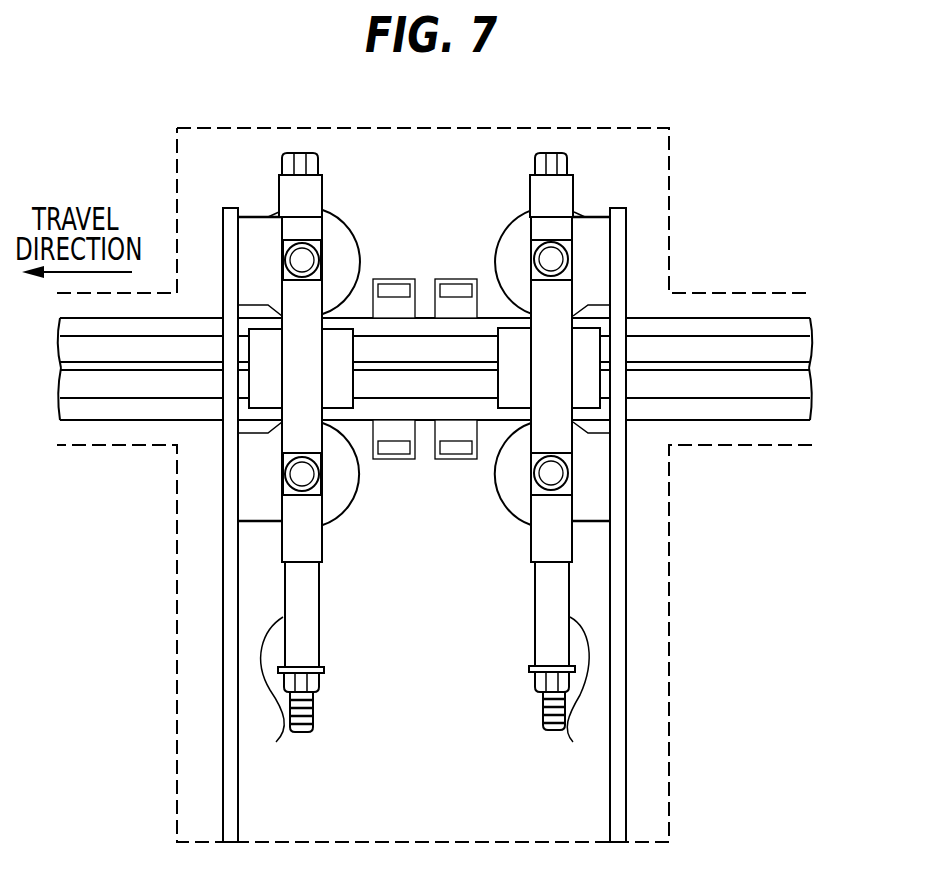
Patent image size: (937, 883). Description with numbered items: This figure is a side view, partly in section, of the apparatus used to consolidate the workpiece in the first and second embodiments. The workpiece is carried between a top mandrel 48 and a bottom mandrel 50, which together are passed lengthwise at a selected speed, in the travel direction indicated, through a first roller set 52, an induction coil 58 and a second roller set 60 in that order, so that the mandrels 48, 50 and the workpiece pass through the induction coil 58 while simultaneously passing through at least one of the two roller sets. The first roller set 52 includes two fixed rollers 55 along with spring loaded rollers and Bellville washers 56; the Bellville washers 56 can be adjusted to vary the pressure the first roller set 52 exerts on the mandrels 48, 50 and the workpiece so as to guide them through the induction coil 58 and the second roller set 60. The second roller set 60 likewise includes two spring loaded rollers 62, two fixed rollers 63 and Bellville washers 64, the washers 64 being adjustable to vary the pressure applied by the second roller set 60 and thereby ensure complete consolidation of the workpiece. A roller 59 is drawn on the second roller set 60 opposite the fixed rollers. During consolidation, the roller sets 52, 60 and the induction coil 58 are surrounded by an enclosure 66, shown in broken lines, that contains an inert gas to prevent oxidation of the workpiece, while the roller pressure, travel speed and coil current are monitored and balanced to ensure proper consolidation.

The top mandrel 48 is at (748, 318).
The bottom mandrel 50 is at (765, 420).
The first roller set 52 is at (571, 142).
The fixed rollers 55 is at (508, 221).
The Bellville washers 56 is at (584, 692).
The induction coil 58 is at (448, 468).
The right lower roller 59 is at (512, 507).
The second roller set 60 is at (293, 142).
The spring loaded rollers 62 is at (340, 507).
The fixed rollers 63 is at (349, 221).
The Bellville washers 64 is at (268, 691).
The enclosure 66 is at (675, 652).